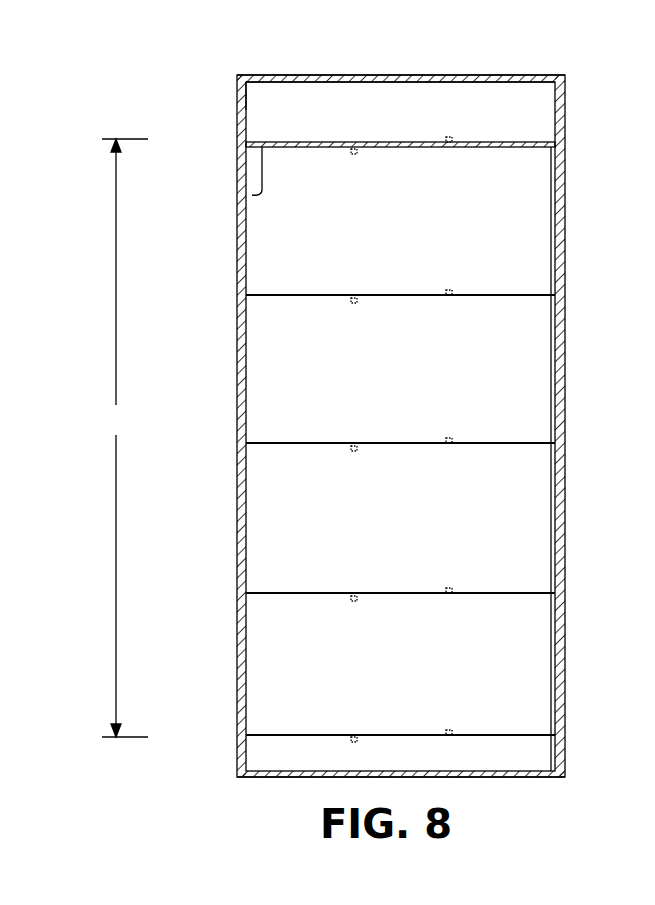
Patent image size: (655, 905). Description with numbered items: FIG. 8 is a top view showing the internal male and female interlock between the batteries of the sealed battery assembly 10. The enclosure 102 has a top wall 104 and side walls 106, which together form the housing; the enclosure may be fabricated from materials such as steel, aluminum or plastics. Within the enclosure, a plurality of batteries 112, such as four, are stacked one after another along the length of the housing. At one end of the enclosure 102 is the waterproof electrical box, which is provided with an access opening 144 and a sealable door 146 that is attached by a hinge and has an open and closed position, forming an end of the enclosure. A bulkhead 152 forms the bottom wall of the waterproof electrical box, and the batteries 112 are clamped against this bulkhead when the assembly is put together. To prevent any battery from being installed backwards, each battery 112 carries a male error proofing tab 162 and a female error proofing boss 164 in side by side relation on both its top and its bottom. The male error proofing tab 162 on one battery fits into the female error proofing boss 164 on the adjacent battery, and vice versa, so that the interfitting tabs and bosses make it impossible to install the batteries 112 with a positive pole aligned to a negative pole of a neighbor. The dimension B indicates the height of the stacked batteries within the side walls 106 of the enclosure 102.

The storage system 10 is at (562, 49).
The enclosure 102 is at (240, 693).
The top wall 104 is at (392, 75).
The side walls 106 is at (238, 279).
The batteries 112 is at (535, 200).
The access opening 144 is at (247, 84).
The sealable door 146 is at (345, 75).
The bulkhead 152 is at (252, 195).
The male error proofing tab 162 is at (449, 147).
The female error proofing boss 164 is at (354, 154).
The height dimension B is at (125, 438).